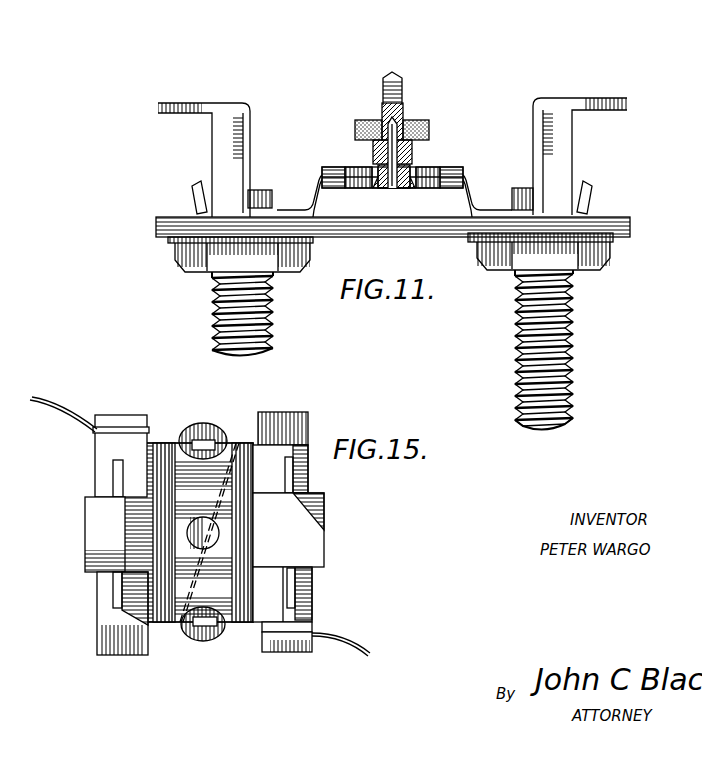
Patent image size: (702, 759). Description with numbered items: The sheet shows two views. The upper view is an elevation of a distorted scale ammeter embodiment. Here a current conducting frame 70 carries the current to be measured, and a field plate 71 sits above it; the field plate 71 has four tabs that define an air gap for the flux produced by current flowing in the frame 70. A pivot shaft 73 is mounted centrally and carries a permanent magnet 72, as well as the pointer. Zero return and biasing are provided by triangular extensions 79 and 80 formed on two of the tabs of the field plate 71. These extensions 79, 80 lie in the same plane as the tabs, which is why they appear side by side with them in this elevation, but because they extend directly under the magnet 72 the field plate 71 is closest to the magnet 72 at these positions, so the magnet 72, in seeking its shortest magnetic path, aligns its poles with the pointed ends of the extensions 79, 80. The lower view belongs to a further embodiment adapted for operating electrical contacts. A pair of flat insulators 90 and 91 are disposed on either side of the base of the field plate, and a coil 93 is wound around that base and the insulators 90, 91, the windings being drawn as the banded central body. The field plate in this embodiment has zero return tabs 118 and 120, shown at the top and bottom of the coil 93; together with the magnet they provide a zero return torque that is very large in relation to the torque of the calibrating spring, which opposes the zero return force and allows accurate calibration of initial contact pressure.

In FIG. 11, the current conducting frame 70 is at (572, 155).
In FIG. 11, the field plate 71 is at (452, 158).
In FIG. 11, the permanent magnet 72 is at (358, 123).
In FIG. 11, the pivot shaft 73 is at (402, 162).
In FIG. 11, the triangular extension 79 is at (363, 167).
In FIG. 11, the triangular extension 80 is at (415, 170).
In FIG. 15, the flat insulator 90 is at (325, 548).
In FIG. 15, the flat insulator 91 is at (95, 453).
In FIG. 15, the coil 93 is at (173, 623).
In FIG. 15, the zero return tab 118 is at (199, 441).
In FIG. 15, the zero return tab 120 is at (212, 640).